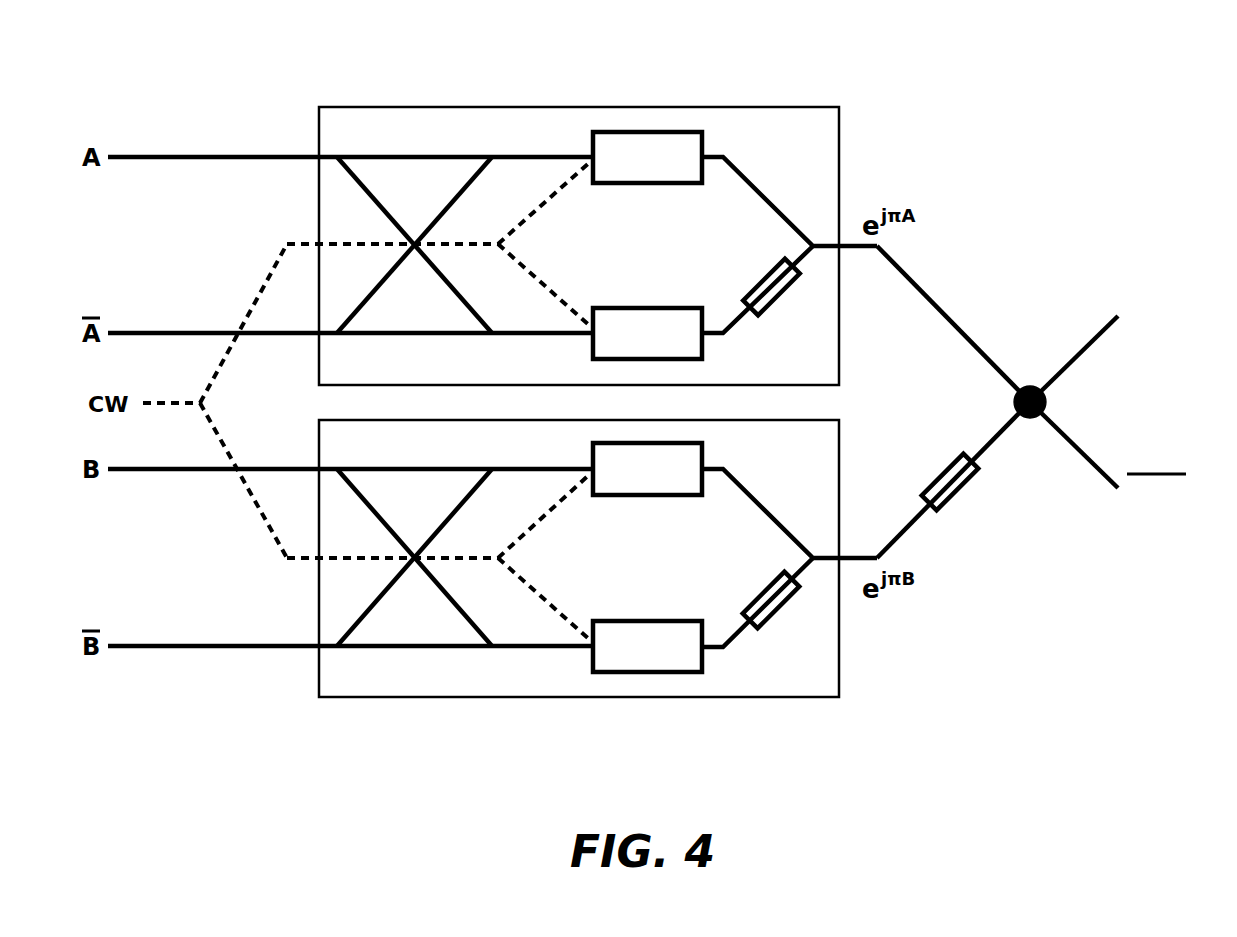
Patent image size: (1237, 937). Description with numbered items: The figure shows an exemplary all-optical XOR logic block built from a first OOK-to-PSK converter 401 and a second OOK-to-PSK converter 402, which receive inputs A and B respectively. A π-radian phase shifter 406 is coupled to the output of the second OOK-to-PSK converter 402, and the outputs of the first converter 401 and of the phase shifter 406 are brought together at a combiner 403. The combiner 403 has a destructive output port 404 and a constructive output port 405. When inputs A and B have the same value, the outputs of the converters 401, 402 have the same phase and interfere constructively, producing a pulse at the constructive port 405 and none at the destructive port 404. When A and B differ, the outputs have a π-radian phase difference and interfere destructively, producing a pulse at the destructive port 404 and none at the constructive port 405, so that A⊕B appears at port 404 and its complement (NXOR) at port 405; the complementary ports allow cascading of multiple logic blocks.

The first OOK-to-PSK converter 401 is at (571, 107).
The second OOK-to-PSK converter 402 is at (572, 697).
The combiner 403 is at (1030, 388).
The destructive output port 404 is at (1112, 318).
The constructive output port 405 is at (1097, 478).
The π-radian phase shifter 406 is at (940, 470).